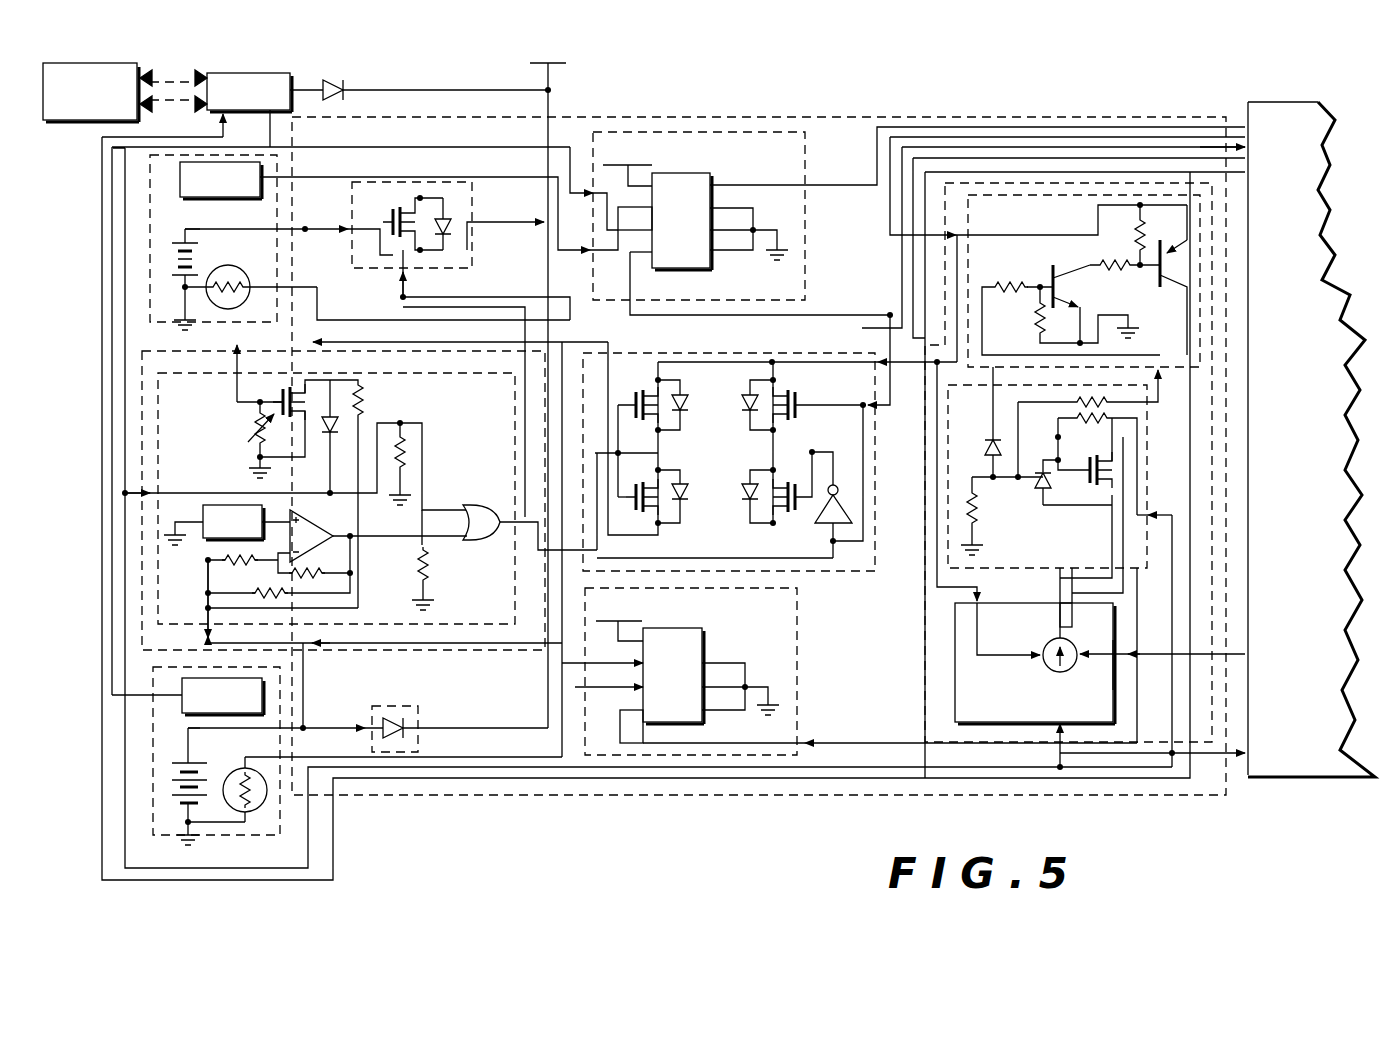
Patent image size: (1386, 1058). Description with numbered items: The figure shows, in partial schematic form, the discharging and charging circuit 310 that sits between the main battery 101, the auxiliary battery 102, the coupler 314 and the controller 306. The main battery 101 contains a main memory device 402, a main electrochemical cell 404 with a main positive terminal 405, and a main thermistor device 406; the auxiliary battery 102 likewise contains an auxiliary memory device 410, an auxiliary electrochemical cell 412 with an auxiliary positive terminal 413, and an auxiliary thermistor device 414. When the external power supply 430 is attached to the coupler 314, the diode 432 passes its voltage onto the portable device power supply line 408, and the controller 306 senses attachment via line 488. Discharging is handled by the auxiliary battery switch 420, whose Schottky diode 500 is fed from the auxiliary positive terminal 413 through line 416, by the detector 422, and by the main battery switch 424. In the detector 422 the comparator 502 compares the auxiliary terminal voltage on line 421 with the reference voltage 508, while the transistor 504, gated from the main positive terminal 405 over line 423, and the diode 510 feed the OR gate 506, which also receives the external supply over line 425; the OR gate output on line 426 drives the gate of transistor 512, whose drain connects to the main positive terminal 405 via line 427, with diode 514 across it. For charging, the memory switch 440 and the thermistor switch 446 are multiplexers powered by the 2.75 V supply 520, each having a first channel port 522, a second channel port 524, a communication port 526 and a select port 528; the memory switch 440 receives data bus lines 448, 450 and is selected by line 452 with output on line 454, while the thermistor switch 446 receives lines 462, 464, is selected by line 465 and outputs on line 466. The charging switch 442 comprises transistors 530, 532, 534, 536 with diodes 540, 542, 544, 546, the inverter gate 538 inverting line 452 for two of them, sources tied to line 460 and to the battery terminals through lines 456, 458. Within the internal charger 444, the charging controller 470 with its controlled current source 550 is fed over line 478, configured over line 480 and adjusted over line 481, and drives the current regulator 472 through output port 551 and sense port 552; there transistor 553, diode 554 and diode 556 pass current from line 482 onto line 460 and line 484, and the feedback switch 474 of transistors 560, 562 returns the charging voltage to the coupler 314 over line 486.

The main battery 101 is at (150, 282).
The auxiliary battery 102 is at (165, 835).
The controller 306 is at (1285, 102).
The discharging and charging circuit 310 is at (945, 117).
The coupler 314 is at (240, 73).
The main memory device 402 is at (232, 197).
The main electrochemical cell 404 is at (160, 250).
The main positive terminal 405 is at (180, 243).
The main thermistor device 406 is at (248, 275).
The portable device power supply line 408 is at (528, 55).
The auxiliary memory device 410 is at (182, 692).
The auxiliary electrochemical cell 412 is at (160, 768).
The auxiliary positive terminal 413 is at (178, 760).
The auxiliary thermistor device 414 is at (276, 812).
The line 416 is at (322, 728).
The auxiliary battery switch 420 is at (398, 706).
The line 421 is at (303, 645).
The detector 422 is at (420, 373).
The line 423 is at (312, 320).
The main battery switch 424 is at (470, 250).
The line 425 is at (165, 493).
The line 426 is at (515, 385).
The line 427 is at (303, 229).
The external power supply 430 is at (88, 63).
The diode 432 is at (333, 78).
The memory switch 440 is at (720, 132).
The charging switch 442 is at (800, 571).
The internal charger 444 is at (938, 742).
The thermistor switch 446 is at (800, 705).
The data bus line 448 is at (362, 182).
The data bus line 450 is at (368, 148).
The line 452 is at (810, 317).
The line 454 is at (810, 187).
The line 456 is at (345, 351).
The line 458 is at (490, 608).
The line 460 is at (945, 272).
The line 462 is at (345, 342).
The line 464 is at (433, 757).
The line 465 is at (822, 743).
The line 466 is at (802, 640).
The charging controller 470 is at (970, 724).
The current regulator 472 is at (1170, 560).
The feedback switch 474 is at (950, 236).
The line 478 is at (1062, 770).
The line 480 is at (1113, 660).
The line 481 is at (977, 587).
The line 482 is at (1178, 654).
The line 484 is at (1162, 392).
The line 486 is at (115, 140).
The line 488 is at (1240, 755).
The diode 500 is at (406, 725).
The comparator 502 is at (318, 545).
The transistor 504 is at (254, 432).
The OR gate 506 is at (495, 505).
The reference voltage 508 is at (215, 540).
The diode 510 is at (364, 412).
The transistor 512 is at (395, 245).
The diode 514 is at (452, 222).
The 2.75 V supply 520 is at (633, 148).
The first channel port 522 is at (638, 205).
The second channel port 524 is at (706, 268).
The communication port 526 is at (710, 185).
The select port 528 is at (645, 262).
The transistor 530 is at (630, 398).
The transistor 532 is at (635, 485).
The transistor 534 is at (800, 395).
The transistor 536 is at (800, 480).
The inverter gate 538 is at (830, 528).
The diode 540 is at (686, 395).
The diode 542 is at (680, 508).
The diode 544 is at (748, 415).
The diode 546 is at (745, 485).
The controlled current source 550 is at (1075, 668).
The output port 551 is at (1058, 616).
The sense port 552 is at (1060, 626).
The transistor 553 is at (1100, 488).
The diode 554 is at (1035, 495).
The diode 556 is at (990, 437).
The transistor 560 is at (1050, 275).
The transistor 562 is at (1158, 285).